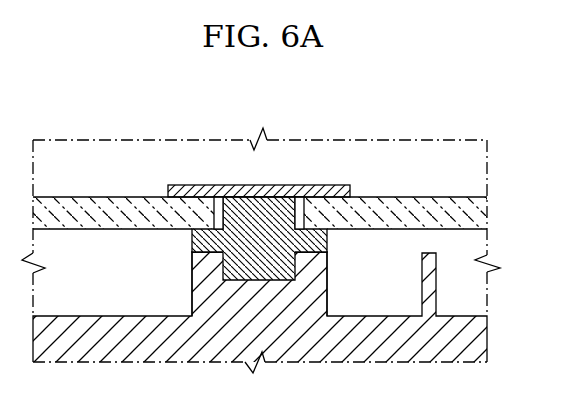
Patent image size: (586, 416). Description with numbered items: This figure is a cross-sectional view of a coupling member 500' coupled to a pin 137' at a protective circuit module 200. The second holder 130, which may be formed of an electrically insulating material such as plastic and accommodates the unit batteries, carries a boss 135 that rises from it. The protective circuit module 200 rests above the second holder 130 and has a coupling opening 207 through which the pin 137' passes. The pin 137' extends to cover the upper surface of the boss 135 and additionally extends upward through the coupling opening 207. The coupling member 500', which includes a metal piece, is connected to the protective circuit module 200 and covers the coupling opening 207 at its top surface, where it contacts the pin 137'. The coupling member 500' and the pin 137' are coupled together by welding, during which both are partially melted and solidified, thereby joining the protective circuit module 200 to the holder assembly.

The coupling member 500' is at (256, 146).
The pin 137' is at (259, 188).
The coupling opening 207 is at (298, 222).
The protective circuit module 200 is at (477, 218).
The second holder 130 is at (477, 340).
The boss 135 is at (196, 272).